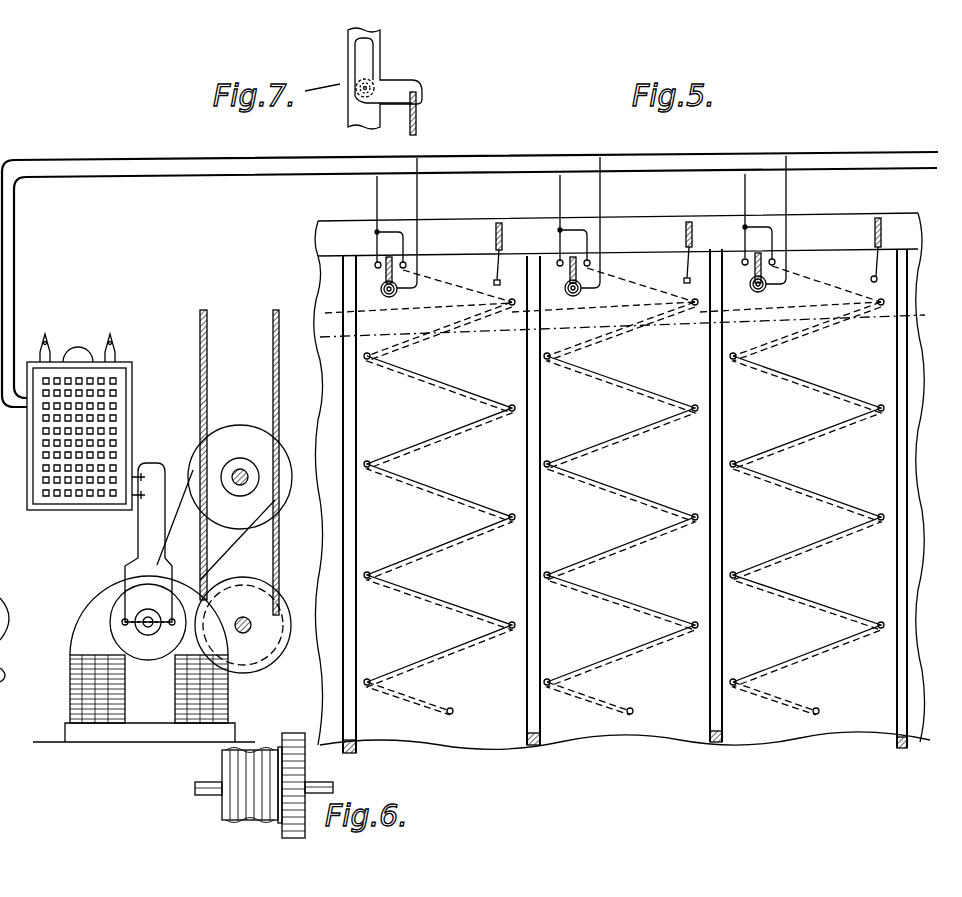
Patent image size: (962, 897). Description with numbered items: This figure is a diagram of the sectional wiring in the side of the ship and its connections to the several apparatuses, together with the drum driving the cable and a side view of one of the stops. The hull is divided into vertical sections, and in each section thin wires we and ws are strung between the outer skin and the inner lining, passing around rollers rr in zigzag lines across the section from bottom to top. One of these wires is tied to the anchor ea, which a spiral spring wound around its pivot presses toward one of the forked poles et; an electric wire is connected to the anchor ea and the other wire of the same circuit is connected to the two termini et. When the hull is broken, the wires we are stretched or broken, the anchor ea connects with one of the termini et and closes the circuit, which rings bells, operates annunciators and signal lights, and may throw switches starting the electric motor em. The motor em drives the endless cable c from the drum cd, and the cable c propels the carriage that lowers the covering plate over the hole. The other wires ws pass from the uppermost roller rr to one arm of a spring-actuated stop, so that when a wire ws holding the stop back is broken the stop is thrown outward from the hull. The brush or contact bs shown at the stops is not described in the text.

In FIG. 7, the brush spring bs is at (362, 63).
In FIG. 5, the brush spring bs is at (502, 240).
In FIG. 7, the wires ws is at (418, 121).
In FIG. 5, the wires ws is at (458, 678).
In FIG. 5, the forked poles et is at (775, 260).
In FIG. 5, the anchor ea is at (561, 275).
In FIG. 5, the wires we is at (832, 606).
In FIG. 5, the rollers rr is at (738, 683).
In FIG. 5, the endless cable c is at (207, 362).
In FIG. 5, the electric motor em is at (144, 659).
In FIG. 5, the drum cd is at (248, 648).
In FIG. 6, the drum cd is at (252, 785).